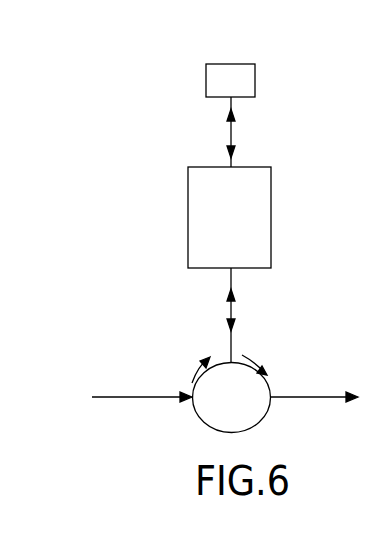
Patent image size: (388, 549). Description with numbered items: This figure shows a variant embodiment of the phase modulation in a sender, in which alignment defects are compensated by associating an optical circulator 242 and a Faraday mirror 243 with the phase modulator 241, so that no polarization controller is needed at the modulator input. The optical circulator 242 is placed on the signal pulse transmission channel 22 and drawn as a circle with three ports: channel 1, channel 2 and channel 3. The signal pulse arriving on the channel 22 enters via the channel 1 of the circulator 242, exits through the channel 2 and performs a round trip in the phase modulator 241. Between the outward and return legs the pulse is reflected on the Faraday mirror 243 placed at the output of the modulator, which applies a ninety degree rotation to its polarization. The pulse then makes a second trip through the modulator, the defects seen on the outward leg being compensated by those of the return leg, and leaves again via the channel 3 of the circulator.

The Faraday mirror 243 is at (255, 83).
The phase modulator 241 is at (271, 222).
The optical circulator 242 is at (278, 385).
The signal pulse transmission channel 22 is at (130, 403).
The channel 1 of the circulator 1 is at (188, 413).
The channel 2 of the circulator 2 is at (222, 350).
The channel 3 of the circulator 3 is at (282, 418).